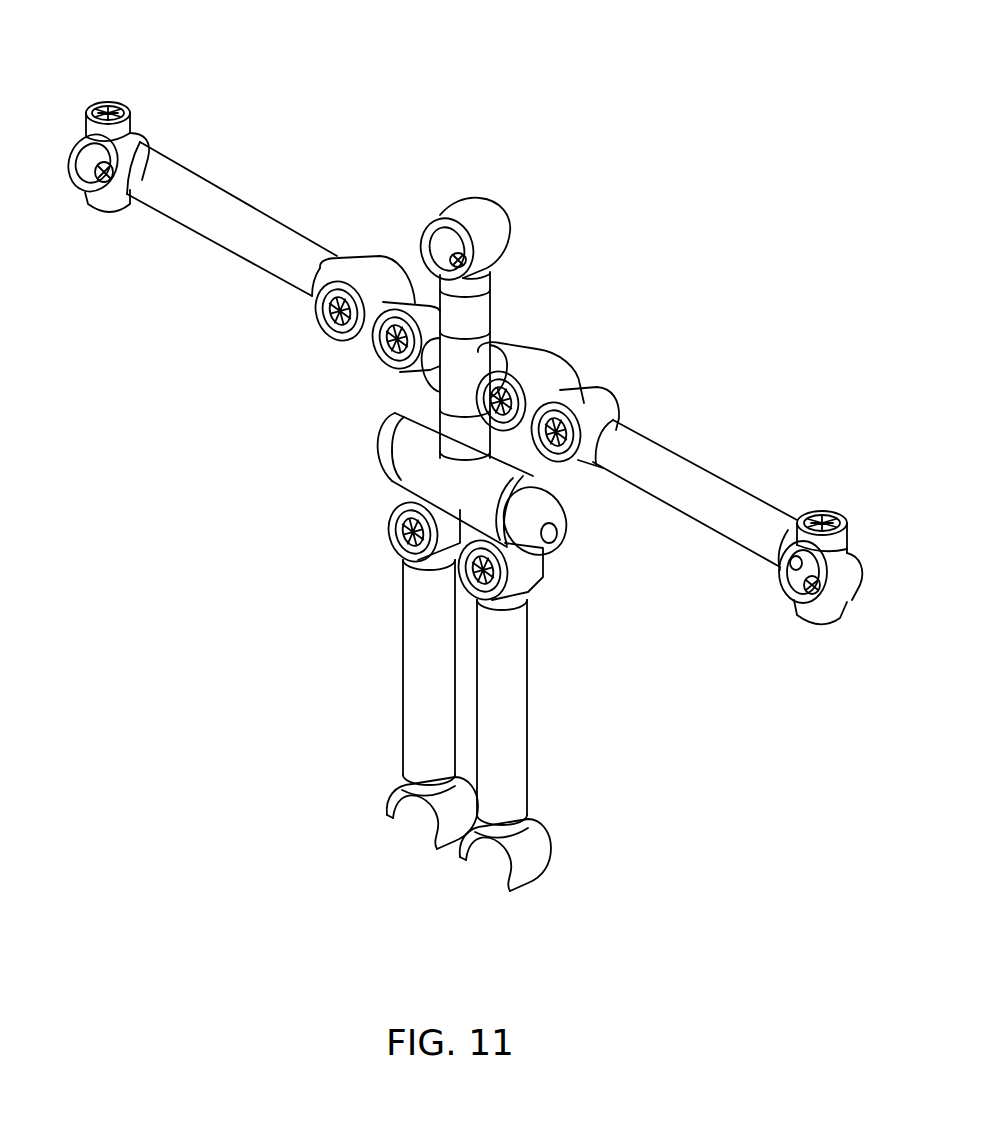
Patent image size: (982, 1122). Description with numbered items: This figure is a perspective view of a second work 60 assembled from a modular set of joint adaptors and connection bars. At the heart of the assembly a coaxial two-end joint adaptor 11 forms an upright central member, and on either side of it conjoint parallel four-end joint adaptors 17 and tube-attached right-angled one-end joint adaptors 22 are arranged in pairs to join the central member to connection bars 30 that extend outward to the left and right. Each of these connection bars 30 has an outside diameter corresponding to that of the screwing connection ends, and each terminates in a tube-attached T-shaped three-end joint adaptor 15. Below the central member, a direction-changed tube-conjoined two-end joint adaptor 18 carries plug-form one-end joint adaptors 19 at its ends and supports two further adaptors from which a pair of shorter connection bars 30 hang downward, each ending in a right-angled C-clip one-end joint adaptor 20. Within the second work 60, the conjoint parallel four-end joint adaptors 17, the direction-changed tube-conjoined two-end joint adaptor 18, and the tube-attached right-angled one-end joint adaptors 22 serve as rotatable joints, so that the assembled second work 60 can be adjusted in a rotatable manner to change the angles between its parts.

The coaxial two-end joint adaptor 11 is at (440, 372).
The tube-attached T-shaped three-end joint adaptor 15 is at (142, 140).
The conjoint parallel four-end joint adaptor 17 is at (403, 277).
The direction-changed tube-conjoined two-end joint adaptor 18 is at (407, 480).
The plug-form one-end joint adaptor 19 is at (373, 453).
The right-angled C-clip one-end joint adaptor 20 is at (393, 820).
The tube-attached right-angled one-end joint adaptor 22 is at (357, 273).
The connection bar 30 is at (247, 208).
The second work 60 is at (625, 182).